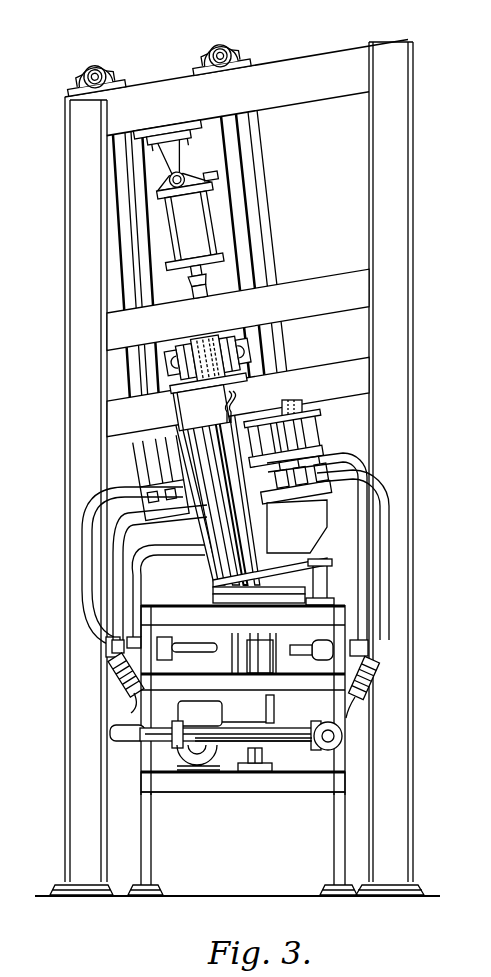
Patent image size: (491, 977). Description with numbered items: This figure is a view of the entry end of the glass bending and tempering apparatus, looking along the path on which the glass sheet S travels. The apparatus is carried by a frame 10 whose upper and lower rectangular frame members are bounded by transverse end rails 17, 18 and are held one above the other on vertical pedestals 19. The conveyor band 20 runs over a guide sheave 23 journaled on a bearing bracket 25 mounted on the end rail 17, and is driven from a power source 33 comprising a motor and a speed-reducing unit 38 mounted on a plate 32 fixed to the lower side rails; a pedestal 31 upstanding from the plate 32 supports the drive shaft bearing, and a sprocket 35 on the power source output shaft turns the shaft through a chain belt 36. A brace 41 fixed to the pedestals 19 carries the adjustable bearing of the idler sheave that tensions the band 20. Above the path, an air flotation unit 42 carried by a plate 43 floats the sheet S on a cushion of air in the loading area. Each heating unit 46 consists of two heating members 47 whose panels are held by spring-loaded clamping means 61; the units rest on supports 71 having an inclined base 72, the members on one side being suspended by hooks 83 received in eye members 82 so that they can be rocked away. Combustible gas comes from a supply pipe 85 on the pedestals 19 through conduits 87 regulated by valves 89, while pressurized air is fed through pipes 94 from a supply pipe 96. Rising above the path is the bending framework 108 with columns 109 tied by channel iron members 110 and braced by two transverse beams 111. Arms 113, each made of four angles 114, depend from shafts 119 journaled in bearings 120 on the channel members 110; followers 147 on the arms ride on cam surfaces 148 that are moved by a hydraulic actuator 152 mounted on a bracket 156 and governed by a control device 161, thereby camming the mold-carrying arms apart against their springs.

The frame 10 is at (198, 800).
The end rail 17 is at (316, 618).
The end rail 18 is at (247, 786).
The pedestals 19 is at (147, 845).
The band 20 is at (243, 700).
The guide sheave 23 is at (262, 585).
The bearing bracket 25 is at (258, 598).
The pedestal 31 is at (258, 764).
The plate 32 is at (240, 771).
The power source 33 is at (167, 758).
The sprocket 35 is at (305, 736).
The chain belt 36 is at (274, 710).
The speed-reducing unit 38 is at (196, 754).
The brace 41 is at (177, 683).
The air flotation unit 42 is at (190, 468).
The plate 43 is at (207, 552).
The heating unit 46 is at (304, 423).
The heating member 47 is at (196, 442).
The clamping means 61 is at (285, 403).
The support 71 is at (166, 411).
The base 72 is at (318, 556).
The eye member 82 is at (236, 404).
The hook 83 is at (226, 406).
The supply pipe 85 is at (318, 755).
The conduit 87 is at (103, 530).
The valve 89 is at (360, 703).
The pipe 94 is at (110, 478).
The supply pipe 96 is at (310, 658).
The framework 108 is at (416, 185).
The columns 109 is at (82, 205).
The channel iron members 110 is at (315, 78).
The beams 111 is at (327, 290).
The arms 113 is at (130, 257).
The angles 114 is at (268, 222).
The shaft 119 is at (93, 66).
The bearings 120 is at (115, 72).
The followers 147 is at (172, 352).
The cam surfaces 148 is at (228, 338).
The actuator 152 is at (162, 226).
The mounting bracket 156 is at (238, 129).
The control device 161 is at (163, 180).
The glass sheet S is at (297, 526).